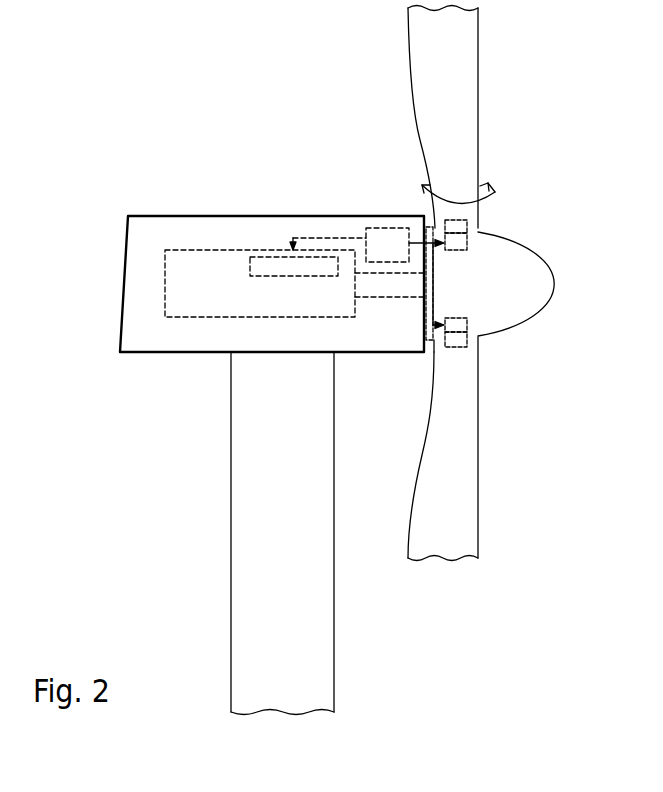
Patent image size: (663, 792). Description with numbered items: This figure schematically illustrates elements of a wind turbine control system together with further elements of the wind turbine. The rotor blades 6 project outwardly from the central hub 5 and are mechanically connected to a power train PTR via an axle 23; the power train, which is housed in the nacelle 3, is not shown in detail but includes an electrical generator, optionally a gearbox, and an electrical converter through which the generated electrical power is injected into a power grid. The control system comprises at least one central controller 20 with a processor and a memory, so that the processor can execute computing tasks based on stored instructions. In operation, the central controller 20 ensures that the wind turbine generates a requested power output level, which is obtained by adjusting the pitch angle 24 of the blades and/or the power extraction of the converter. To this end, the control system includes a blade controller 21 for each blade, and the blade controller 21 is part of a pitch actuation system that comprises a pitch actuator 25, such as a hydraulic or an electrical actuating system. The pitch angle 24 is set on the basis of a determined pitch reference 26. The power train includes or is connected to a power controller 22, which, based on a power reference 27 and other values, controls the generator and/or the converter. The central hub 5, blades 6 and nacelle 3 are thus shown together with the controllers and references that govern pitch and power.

The nacelle 3 is at (140, 231).
The central hub 5 is at (250, 428).
The rotor blades 6 is at (460, 90).
The central controller 20 is at (388, 228).
The blade controller 21 is at (467, 246).
The power controller 22 is at (262, 263).
The axle 23 is at (395, 288).
The pitch angle 24 is at (495, 192).
The pitch actuator 25 is at (462, 226).
The pitch reference 26 is at (434, 273).
The power reference 27 is at (321, 238).